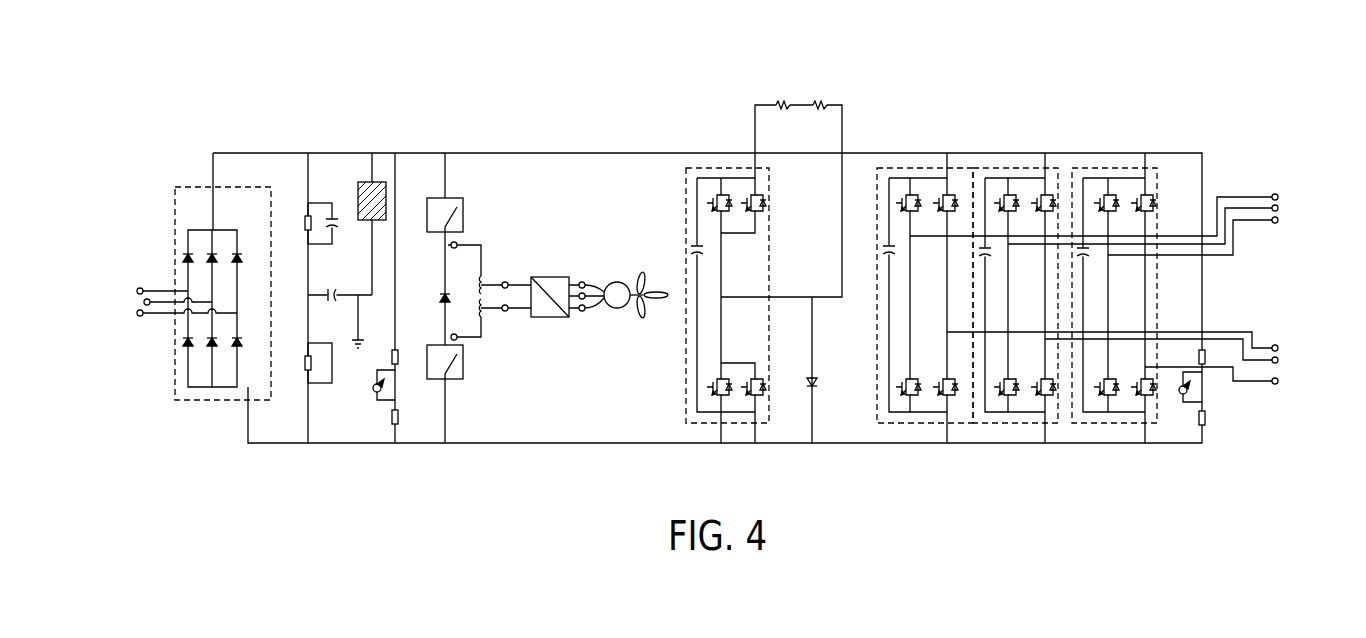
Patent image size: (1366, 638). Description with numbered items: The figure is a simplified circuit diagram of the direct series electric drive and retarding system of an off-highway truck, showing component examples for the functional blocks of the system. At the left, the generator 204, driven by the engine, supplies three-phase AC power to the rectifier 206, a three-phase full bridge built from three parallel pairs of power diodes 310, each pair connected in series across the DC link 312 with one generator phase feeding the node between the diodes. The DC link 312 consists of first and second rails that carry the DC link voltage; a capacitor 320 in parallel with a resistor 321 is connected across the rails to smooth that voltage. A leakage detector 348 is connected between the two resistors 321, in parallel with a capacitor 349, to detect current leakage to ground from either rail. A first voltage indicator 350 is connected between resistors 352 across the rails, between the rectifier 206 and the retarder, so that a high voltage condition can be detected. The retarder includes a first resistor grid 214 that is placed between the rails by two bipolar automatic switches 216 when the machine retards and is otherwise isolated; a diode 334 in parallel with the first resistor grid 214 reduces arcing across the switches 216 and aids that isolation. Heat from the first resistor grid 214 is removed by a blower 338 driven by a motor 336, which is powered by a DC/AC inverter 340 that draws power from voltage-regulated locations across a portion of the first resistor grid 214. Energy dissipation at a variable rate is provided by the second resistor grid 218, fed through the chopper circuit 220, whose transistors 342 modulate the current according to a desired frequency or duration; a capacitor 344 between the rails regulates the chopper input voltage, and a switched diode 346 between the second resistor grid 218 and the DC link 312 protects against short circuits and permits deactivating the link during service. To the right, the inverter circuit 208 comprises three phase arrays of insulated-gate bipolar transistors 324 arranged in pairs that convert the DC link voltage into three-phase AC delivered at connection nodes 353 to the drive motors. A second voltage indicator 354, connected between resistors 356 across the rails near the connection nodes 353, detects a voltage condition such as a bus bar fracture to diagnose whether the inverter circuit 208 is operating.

The generator 204 is at (134, 302).
The rectifier 206 is at (175, 203).
The inverter circuit 208 is at (900, 168).
The first resistor grid 214 is at (486, 283).
The bipolar automatic switch 216 is at (465, 213).
The second resistor grid 218 is at (797, 103).
The chopper circuit 220 is at (686, 190).
The power diodes 310 is at (186, 258).
The DC link 312 is at (447, 152).
The capacitor 320 is at (337, 217).
The resistor 321 is at (306, 216).
The insulated-gate bipolar transistors 324 is at (950, 186).
The diode 334 is at (442, 301).
The motor 336 is at (620, 282).
The blower 338 is at (646, 308).
The DC/AC inverter 340 is at (560, 276).
The transistors 342 is at (722, 186).
The capacitor 344 is at (695, 253).
The switched diode 346 is at (814, 386).
The leakage detector 348 is at (373, 178).
The capacitor 349 is at (338, 293).
The first voltage indicator 350 is at (398, 389).
The resistors 352 is at (400, 358).
The connection nodes 353 is at (1281, 197).
The second voltage indicator 354 is at (1190, 392).
The resistors 356 is at (1206, 421).